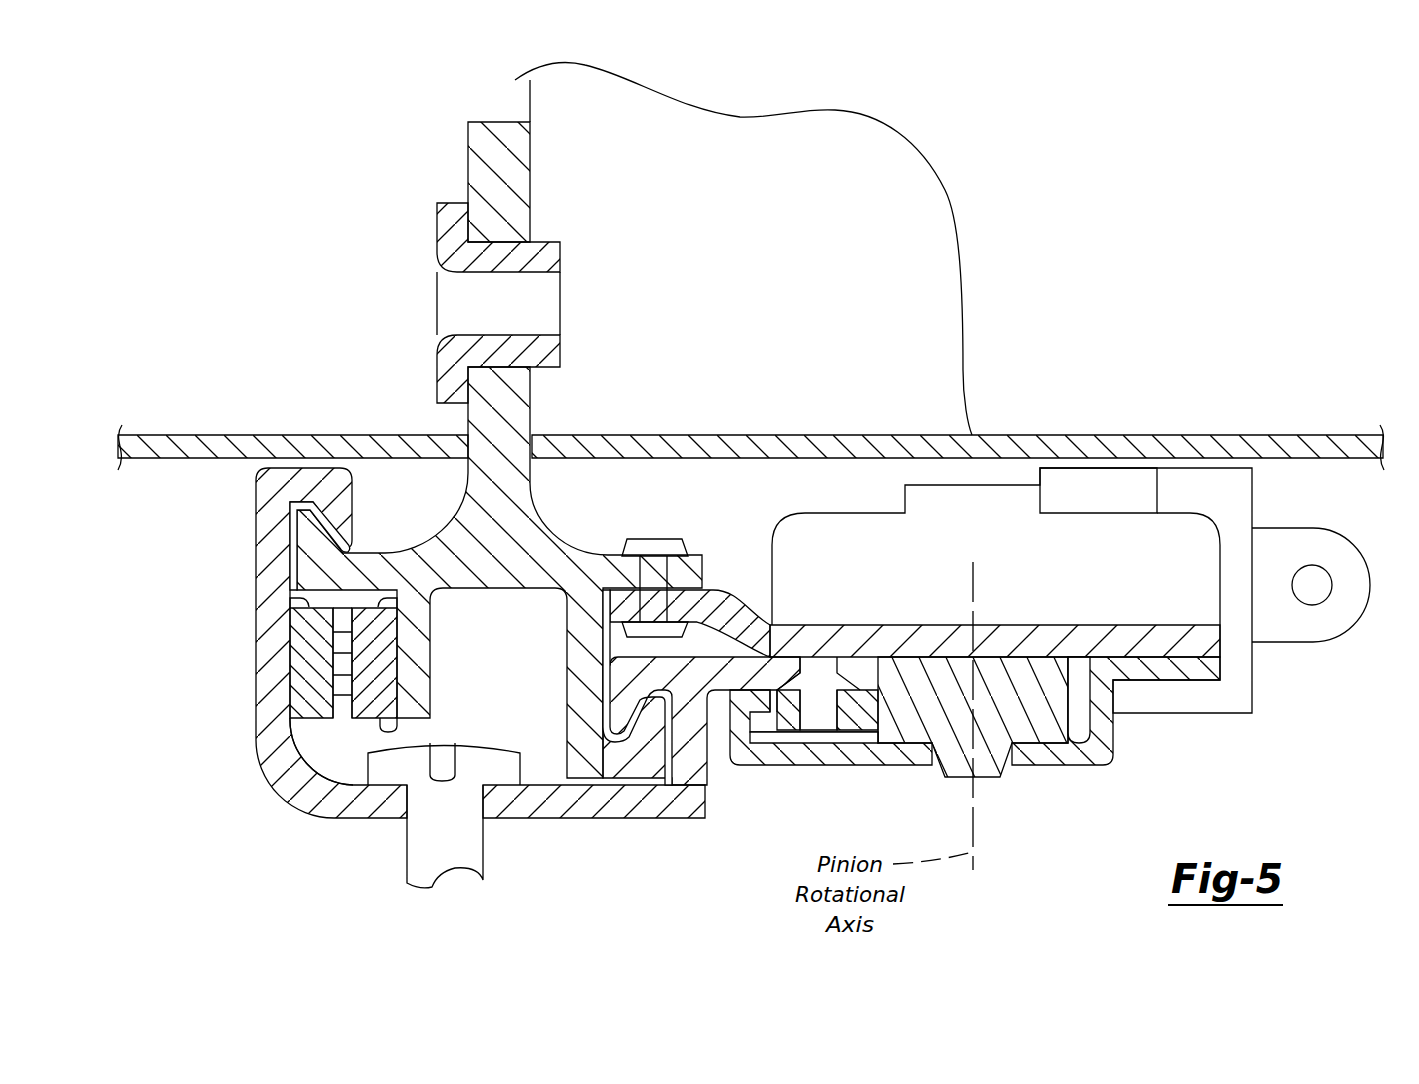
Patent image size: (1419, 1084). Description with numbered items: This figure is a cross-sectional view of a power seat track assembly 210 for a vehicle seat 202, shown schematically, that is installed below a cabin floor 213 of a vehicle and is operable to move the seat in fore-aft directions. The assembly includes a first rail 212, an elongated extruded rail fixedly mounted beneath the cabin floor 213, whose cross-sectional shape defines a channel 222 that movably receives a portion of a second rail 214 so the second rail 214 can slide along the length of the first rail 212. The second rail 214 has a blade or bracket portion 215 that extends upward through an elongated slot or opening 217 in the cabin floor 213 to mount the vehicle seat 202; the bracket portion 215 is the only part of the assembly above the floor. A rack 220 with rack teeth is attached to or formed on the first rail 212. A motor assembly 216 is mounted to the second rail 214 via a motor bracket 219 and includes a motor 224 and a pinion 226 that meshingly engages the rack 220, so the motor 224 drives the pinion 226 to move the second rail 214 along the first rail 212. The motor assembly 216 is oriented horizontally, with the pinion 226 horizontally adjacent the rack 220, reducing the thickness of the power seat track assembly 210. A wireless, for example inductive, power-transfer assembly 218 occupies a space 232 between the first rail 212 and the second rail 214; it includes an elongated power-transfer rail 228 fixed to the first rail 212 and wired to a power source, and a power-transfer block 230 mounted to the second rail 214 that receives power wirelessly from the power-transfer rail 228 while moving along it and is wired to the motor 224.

The vehicle seat 202 is at (878, 166).
The power seat track assembly 210 is at (290, 328).
The first rail 212 is at (256, 505).
The cabin floor 213 is at (832, 435).
The second rail 214 is at (532, 404).
The bracket portion 215 is at (490, 152).
The motor assembly 216 is at (993, 489).
The opening 217 is at (462, 443).
The power-transfer assembly 218 is at (322, 716).
The motor bracket 219 is at (735, 590).
The rack 220 is at (773, 713).
The channel 222 is at (337, 752).
The motor 224 is at (1158, 513).
The pinion 226 is at (1043, 712).
The power-transfer rail 228 is at (310, 667).
The power-transfer block 230 is at (372, 687).
The space 232 is at (345, 598).